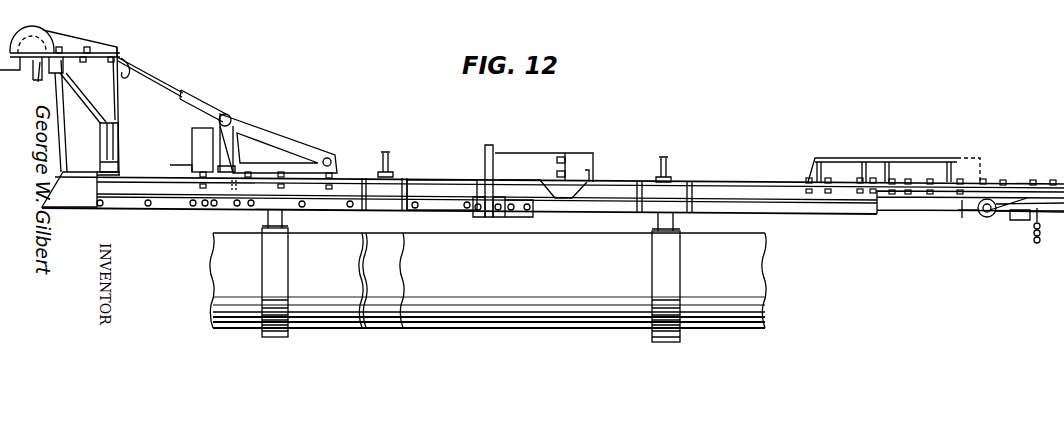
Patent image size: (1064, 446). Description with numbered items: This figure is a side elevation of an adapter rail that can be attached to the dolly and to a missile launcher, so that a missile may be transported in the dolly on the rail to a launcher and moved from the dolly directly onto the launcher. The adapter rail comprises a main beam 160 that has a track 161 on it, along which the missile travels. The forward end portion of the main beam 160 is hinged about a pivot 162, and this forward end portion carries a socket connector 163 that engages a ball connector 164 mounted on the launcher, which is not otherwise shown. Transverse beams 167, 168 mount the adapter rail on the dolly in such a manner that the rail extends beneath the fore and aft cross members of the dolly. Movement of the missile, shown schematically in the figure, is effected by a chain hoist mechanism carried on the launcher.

The main beam 160 is at (721, 182).
The track 161 is at (441, 203).
The pivot 162 is at (231, 115).
The socket connector 163 is at (41, 30).
The ball connector 164 is at (38, 82).
The transverse beam 167 is at (594, 153).
The transverse beam 168 is at (981, 158).